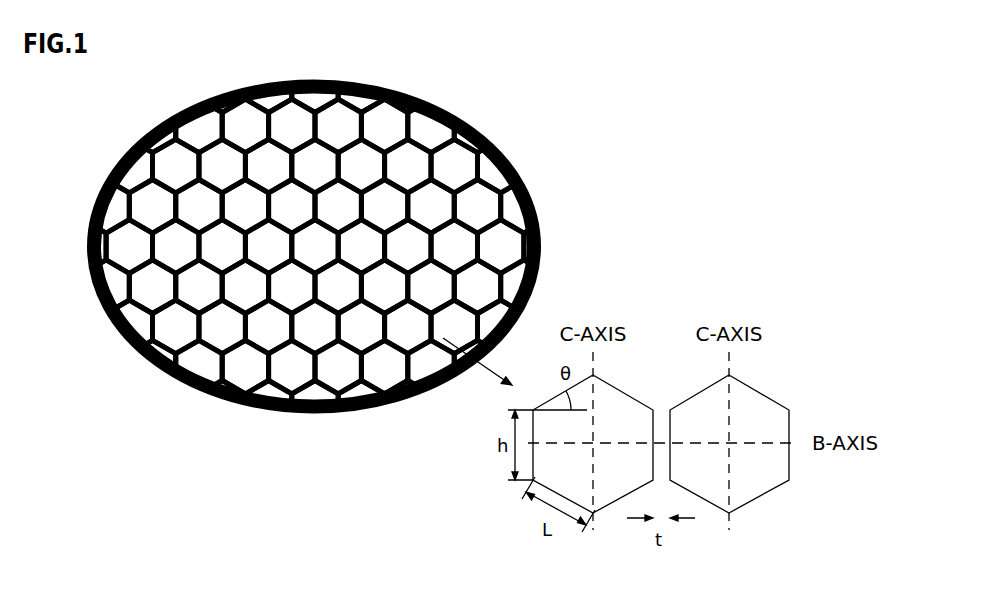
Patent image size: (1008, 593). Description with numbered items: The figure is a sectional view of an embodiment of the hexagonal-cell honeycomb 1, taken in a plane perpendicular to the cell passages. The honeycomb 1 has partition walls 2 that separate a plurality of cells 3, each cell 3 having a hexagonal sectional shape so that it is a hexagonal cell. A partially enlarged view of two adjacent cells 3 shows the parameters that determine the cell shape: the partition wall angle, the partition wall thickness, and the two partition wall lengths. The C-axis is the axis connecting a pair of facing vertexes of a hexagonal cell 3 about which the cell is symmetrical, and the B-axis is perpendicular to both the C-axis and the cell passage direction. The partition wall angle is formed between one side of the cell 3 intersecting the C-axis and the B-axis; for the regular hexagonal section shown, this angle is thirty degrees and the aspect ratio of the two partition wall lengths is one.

The hexagonal-cell honeycomb 1 is at (509, 147).
The partition walls 2 is at (192, 327).
The cell 3 is at (478, 203).